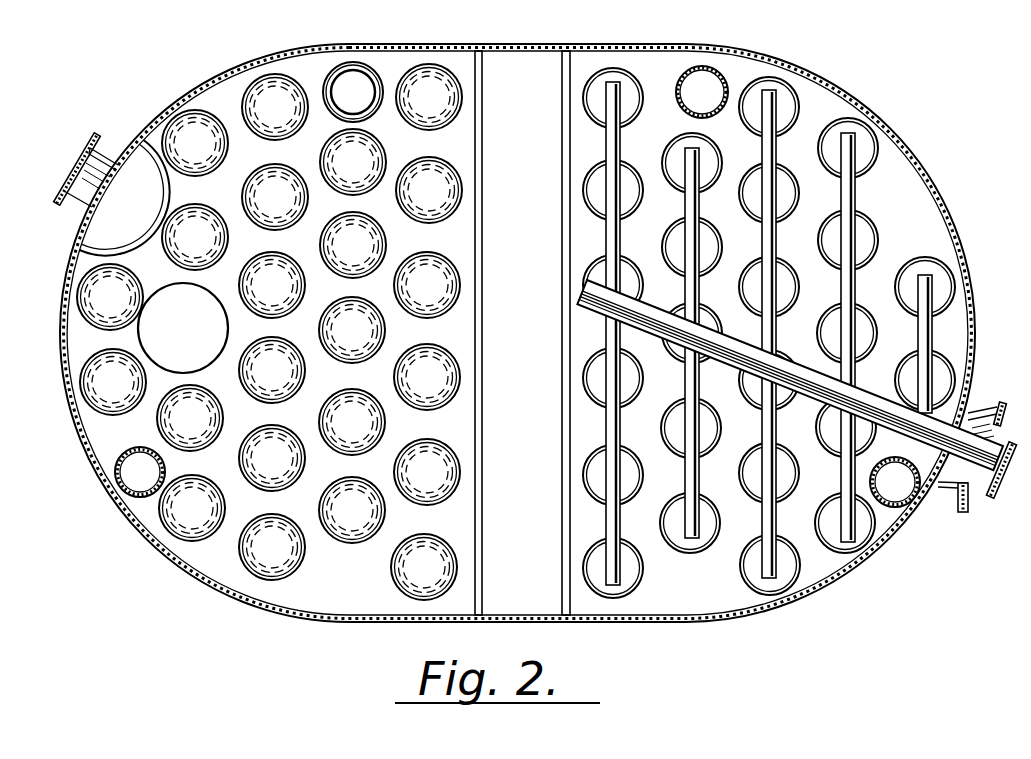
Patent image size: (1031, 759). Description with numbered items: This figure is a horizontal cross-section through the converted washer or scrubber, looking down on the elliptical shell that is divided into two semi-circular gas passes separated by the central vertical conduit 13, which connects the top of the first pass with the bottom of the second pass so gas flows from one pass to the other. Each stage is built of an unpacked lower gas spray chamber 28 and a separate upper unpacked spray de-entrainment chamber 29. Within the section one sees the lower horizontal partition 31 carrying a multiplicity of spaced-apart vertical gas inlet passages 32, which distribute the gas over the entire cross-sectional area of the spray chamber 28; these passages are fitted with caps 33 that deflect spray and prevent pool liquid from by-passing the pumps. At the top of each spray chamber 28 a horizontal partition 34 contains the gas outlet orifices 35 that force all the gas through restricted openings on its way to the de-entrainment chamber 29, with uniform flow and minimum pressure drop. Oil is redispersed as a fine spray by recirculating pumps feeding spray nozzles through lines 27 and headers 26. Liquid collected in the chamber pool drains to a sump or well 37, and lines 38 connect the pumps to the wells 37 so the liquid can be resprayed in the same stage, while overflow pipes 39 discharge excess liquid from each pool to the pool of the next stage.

The central vertical conduit 13 is at (497, 603).
The headers 26 is at (776, 527).
The lines 27 is at (941, 490).
The lower gas spray chamber 28 is at (313, 570).
The spray de-entrainment chamber 29 is at (745, 597).
The lower horizontal partition 31 is at (215, 560).
The vertical gas inlet passages 32 is at (75, 298).
The caps 33 is at (222, 238).
The horizontal partition 34 is at (703, 612).
The gas outlet orifices 35 is at (625, 580).
The sump or well 37 is at (95, 234).
The lines 38 is at (76, 184).
The overflow pipes 39 is at (353, 92).